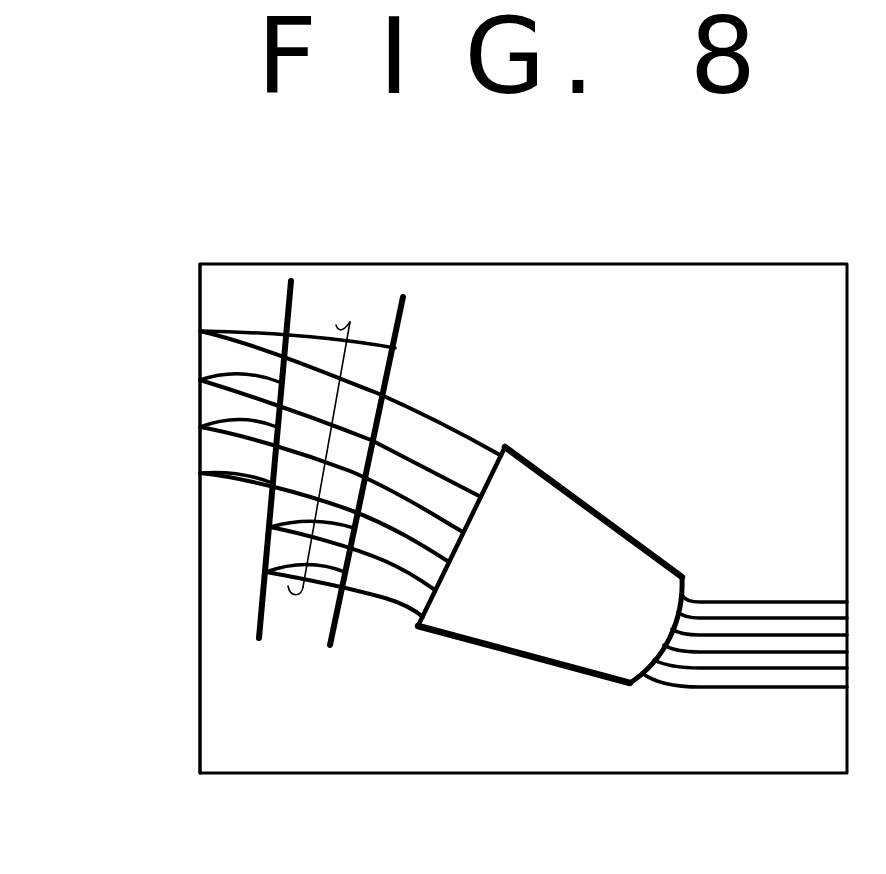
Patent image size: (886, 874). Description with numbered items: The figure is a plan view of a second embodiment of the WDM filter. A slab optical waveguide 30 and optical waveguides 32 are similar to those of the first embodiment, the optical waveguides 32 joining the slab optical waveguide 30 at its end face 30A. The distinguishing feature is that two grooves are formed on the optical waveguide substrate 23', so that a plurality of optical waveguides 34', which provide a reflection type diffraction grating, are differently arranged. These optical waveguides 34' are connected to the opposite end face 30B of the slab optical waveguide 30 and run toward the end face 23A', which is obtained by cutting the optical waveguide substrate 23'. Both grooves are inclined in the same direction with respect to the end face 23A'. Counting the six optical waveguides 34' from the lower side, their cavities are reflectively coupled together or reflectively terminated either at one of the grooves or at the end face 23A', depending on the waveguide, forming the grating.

The optical waveguide substrate 23' is at (523, 556).
The end face 23A' is at (138, 519).
The slab optical waveguide 30 is at (578, 521).
The end face of the slab optical waveguide 30A is at (689, 577).
The end face of the slab optical waveguide 30B is at (500, 446).
The optical waveguides 32 is at (768, 698).
The optical waveguides 34' is at (343, 401).